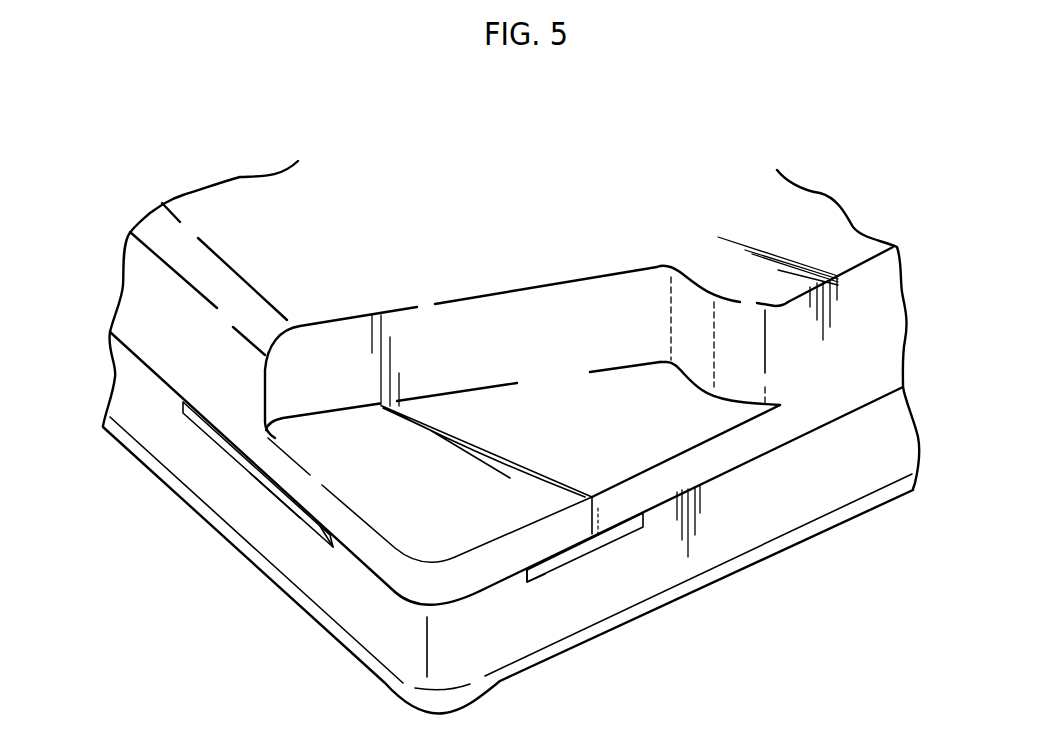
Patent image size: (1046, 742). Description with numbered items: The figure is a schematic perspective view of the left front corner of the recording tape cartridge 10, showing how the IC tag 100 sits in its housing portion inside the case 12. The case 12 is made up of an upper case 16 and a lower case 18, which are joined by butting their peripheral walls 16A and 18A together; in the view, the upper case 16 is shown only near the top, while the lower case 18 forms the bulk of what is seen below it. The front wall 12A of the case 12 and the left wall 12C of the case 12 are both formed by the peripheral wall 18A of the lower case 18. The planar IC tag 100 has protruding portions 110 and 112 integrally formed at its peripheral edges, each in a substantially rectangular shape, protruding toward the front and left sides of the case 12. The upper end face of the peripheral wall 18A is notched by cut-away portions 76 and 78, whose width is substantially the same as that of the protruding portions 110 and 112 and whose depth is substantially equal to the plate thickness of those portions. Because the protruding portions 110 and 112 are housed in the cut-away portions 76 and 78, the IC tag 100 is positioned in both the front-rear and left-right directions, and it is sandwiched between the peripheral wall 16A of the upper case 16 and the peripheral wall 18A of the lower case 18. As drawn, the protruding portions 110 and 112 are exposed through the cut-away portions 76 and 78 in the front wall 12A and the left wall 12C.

The recording tape cartridge 10 is at (260, 144).
The case 12 is at (823, 193).
The front wall 12A is at (156, 442).
The left wall 12C is at (893, 440).
The upper case 16 is at (227, 215).
The peripheral wall of the upper case 16A is at (141, 298).
The lower case 18 is at (727, 541).
The peripheral wall of the lower case 18A is at (129, 396).
The cut-away portion 76 is at (318, 536).
The cut-away portion 78 is at (540, 578).
The IC tag 100 is at (240, 464).
The protruding portion 110 is at (286, 500).
The protruding portion 112 is at (583, 547).